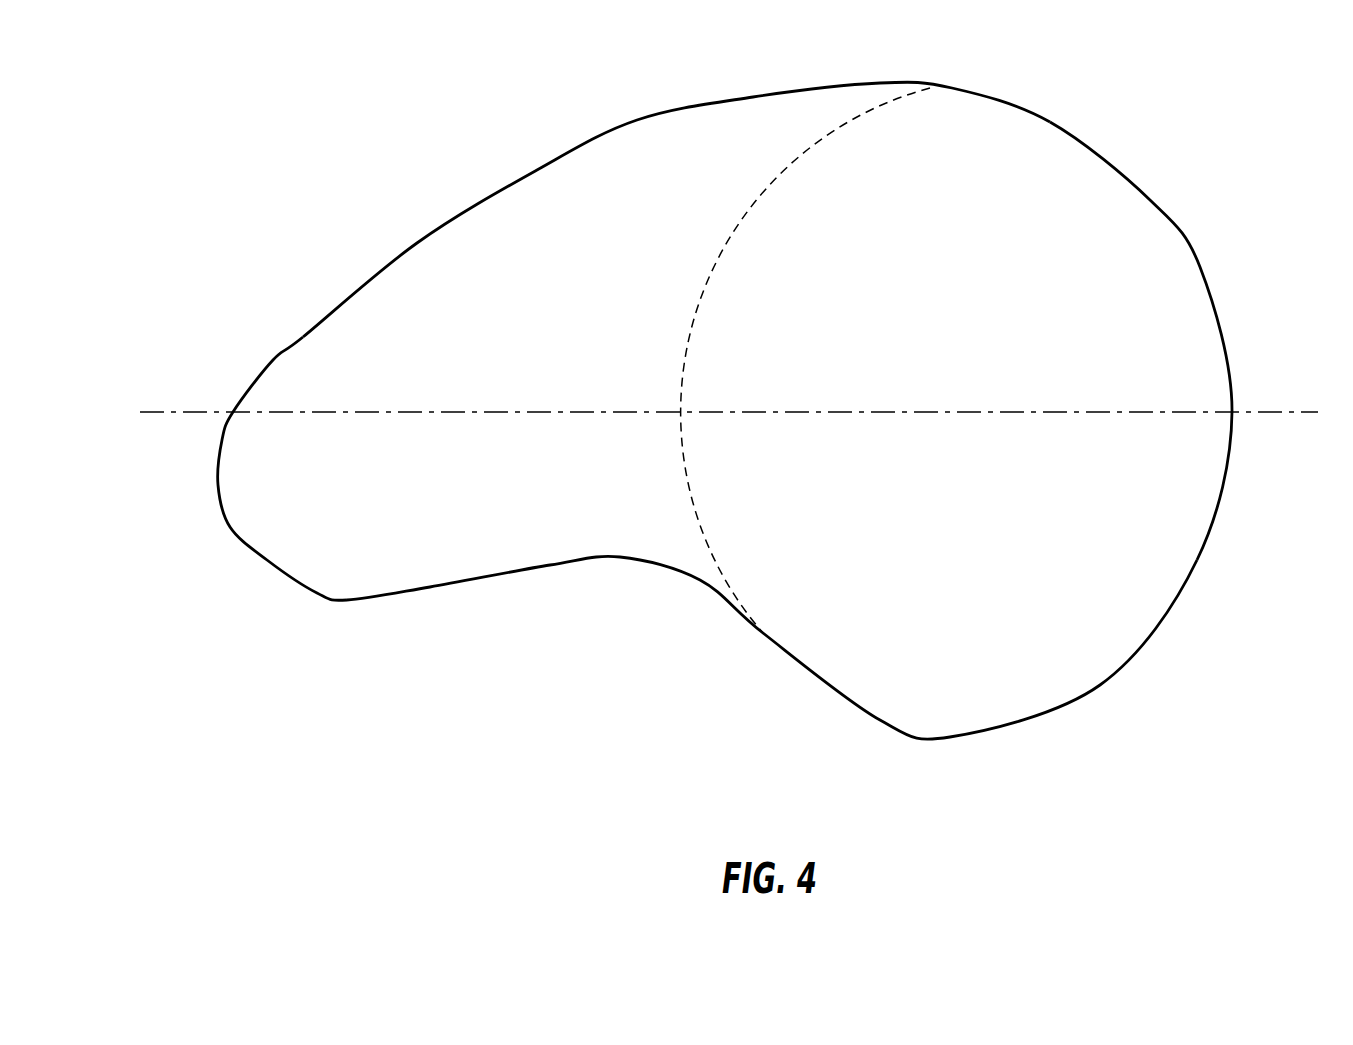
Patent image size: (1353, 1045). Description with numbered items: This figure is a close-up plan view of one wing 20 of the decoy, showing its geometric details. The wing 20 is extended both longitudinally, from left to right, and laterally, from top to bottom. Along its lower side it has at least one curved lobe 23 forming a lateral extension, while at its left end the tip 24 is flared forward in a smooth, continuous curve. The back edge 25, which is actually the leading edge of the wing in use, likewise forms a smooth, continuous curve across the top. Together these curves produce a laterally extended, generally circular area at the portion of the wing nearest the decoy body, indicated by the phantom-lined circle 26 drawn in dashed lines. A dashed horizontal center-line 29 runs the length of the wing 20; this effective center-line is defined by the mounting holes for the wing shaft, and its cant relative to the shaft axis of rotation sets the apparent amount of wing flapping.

The wing 20 is at (725, 393).
The curved lobe 23 is at (1100, 685).
The tip 24 is at (218, 496).
The back edge 25 is at (952, 88).
The phantom lined circle 26 is at (1008, 304).
The center-line 29 is at (552, 412).